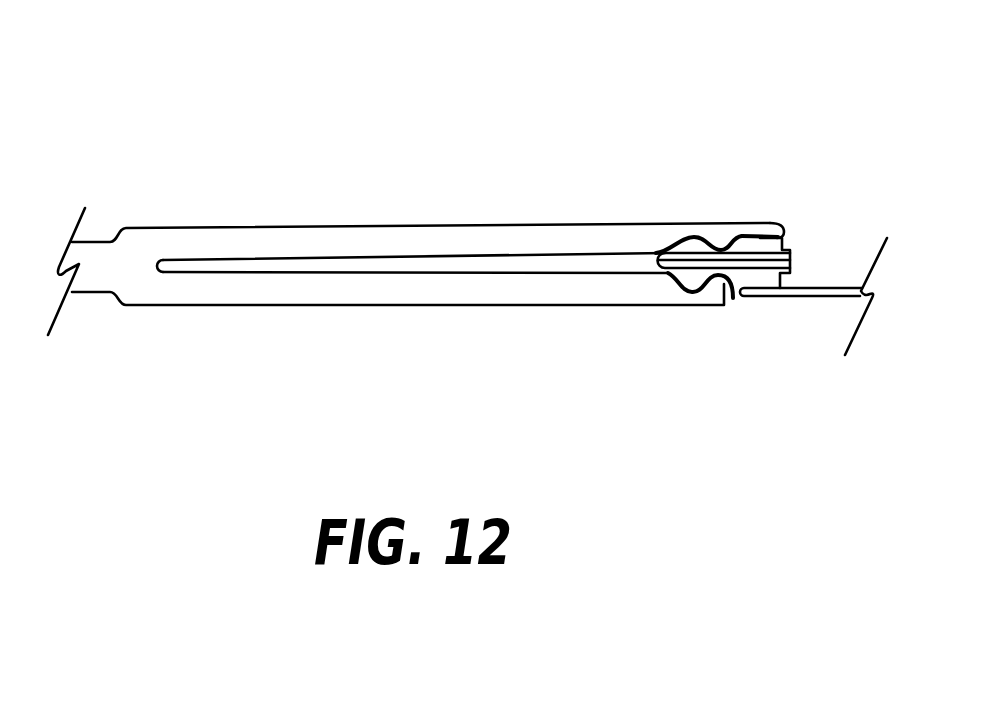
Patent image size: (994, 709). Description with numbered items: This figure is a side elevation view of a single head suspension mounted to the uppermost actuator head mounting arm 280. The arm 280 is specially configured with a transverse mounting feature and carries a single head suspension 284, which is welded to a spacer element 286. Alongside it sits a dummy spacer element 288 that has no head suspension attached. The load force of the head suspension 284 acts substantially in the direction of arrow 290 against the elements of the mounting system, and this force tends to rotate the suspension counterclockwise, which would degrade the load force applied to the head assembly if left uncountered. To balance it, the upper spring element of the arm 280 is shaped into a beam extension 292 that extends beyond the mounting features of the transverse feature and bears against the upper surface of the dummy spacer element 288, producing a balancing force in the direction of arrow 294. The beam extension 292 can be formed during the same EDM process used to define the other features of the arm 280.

The uppermost actuator head mounting arm 280 is at (215, 187).
The single head suspension 284 is at (763, 298).
The spacer element 286 is at (668, 274).
The dummy spacer element 288 is at (690, 247).
The arrow 290 is at (787, 298).
The beam extension 292 is at (753, 232).
The arrow 294 is at (769, 213).